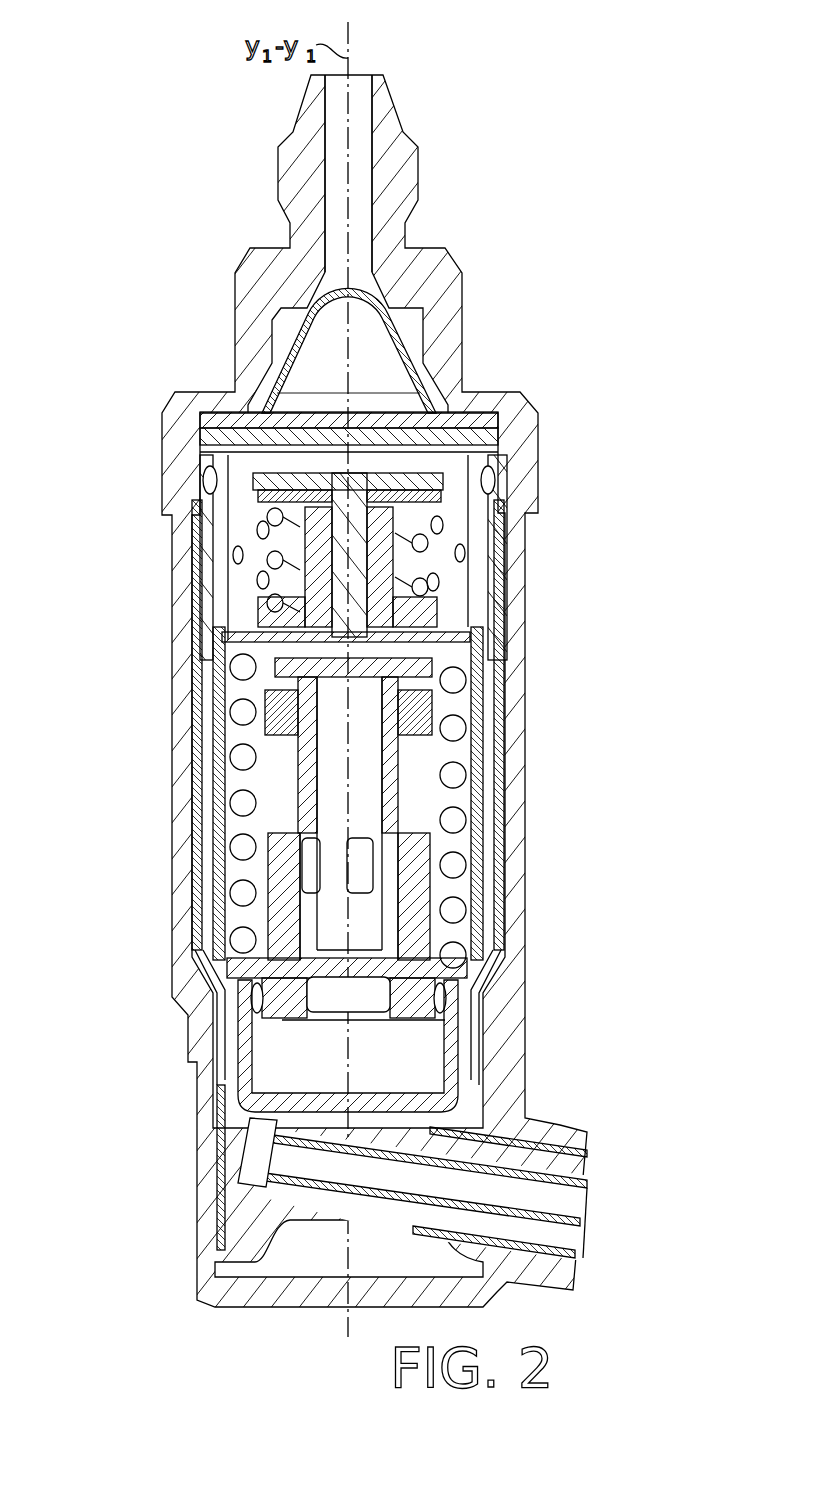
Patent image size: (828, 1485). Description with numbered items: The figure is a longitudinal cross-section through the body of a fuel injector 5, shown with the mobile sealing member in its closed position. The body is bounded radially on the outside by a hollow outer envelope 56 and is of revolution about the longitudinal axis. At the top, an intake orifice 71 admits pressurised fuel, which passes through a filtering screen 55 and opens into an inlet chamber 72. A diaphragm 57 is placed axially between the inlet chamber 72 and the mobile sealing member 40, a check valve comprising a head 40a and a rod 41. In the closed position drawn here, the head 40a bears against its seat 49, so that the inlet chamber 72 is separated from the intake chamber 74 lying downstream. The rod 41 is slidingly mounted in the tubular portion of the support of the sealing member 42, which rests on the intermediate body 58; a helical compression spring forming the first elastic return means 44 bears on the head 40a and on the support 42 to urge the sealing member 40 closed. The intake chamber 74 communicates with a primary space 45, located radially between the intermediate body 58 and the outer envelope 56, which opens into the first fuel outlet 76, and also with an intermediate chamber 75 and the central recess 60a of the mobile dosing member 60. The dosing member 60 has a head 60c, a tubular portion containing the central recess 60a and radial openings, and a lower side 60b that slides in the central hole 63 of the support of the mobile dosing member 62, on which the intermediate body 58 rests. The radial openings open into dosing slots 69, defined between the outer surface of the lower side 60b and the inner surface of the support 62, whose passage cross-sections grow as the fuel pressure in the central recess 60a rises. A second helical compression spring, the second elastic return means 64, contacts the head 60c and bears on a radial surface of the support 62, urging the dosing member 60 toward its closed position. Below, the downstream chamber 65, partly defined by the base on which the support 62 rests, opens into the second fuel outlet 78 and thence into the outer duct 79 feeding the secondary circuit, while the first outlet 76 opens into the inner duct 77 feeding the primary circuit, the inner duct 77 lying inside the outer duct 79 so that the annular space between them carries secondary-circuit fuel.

The injector 5 is at (452, 152).
The intake orifice 71 is at (363, 75).
The screen 55 is at (377, 297).
The inlet chamber 72 is at (377, 367).
The diaphragm 57 is at (503, 413).
The outer envelope 56 is at (520, 437).
The head 40a is at (260, 478).
The seat 49 is at (470, 463).
The intake chamber 74 is at (238, 532).
The first elastic return means 44 is at (420, 542).
The rod 41 is at (335, 560).
The mobile sealing member 40 is at (370, 560).
The support of the sealing member 42 is at (430, 618).
The head 60c is at (420, 705).
The mobile dosing member 60 is at (378, 724).
The central recess 60a is at (365, 754).
The primary space 45 is at (210, 748).
The intermediate body 58 is at (220, 783).
The intermediate chamber 75 is at (243, 830).
The central hole 63 is at (400, 850).
The second elastic return means 64 is at (455, 865).
The dosing slots 69 is at (305, 918).
The lower side 60b is at (305, 950).
The support of the mobile dosing member 62 is at (470, 975).
The downstream chamber 65 is at (280, 1072).
The second fuel outlet 78 is at (400, 1127).
The first fuel outlet 76 is at (235, 1157).
The outer duct 79 is at (580, 1170).
The inner duct 77 is at (570, 1253).